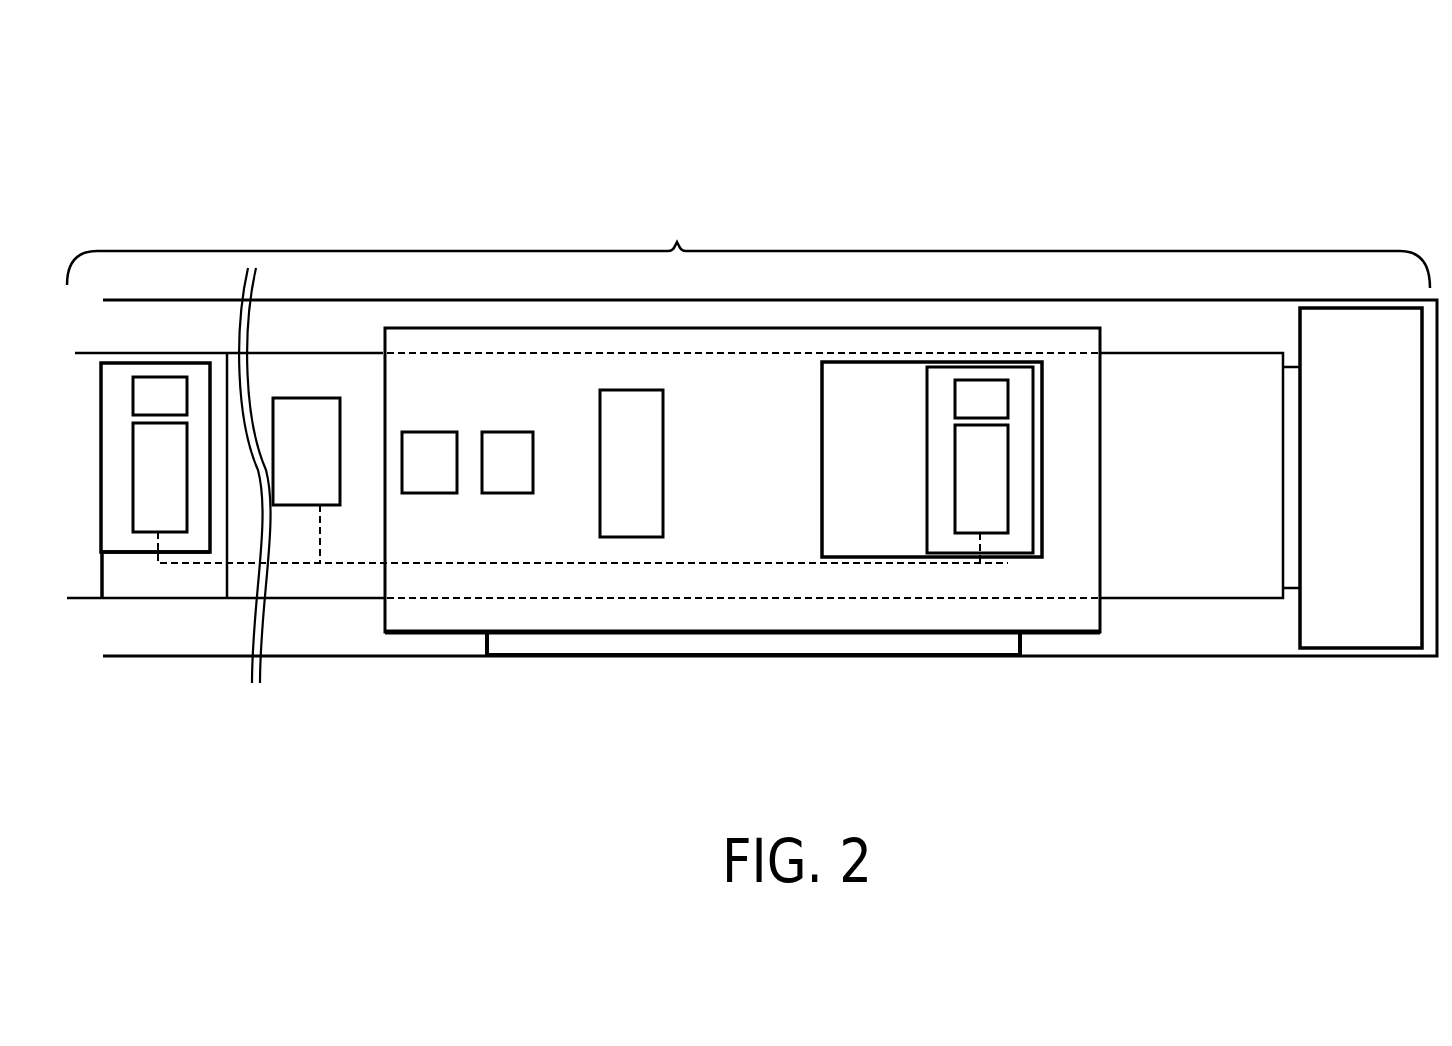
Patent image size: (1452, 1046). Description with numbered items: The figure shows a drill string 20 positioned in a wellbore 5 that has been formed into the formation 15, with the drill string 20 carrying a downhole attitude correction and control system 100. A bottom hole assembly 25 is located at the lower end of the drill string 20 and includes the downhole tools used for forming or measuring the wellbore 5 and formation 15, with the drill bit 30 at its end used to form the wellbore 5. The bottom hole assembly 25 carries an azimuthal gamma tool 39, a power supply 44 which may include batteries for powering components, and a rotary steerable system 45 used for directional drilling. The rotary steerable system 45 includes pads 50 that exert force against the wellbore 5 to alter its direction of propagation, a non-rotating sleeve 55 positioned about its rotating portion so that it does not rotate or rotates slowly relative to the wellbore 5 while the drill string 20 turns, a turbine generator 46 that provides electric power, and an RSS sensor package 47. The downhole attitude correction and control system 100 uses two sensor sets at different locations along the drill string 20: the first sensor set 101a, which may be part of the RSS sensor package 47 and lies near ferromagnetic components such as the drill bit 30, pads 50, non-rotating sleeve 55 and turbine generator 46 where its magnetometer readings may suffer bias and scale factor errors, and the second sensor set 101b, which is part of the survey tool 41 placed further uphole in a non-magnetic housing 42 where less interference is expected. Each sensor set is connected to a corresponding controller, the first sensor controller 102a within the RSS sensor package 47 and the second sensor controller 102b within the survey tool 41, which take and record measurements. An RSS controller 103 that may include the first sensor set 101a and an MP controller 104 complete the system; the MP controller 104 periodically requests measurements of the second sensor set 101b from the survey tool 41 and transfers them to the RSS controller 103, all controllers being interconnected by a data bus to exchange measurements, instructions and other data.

The downhole attitude correction and control system 100 is at (782, 145).
The drill string 20 is at (188, 275).
The wellbore 5 is at (225, 300).
The bottom hole assembly 25 is at (677, 243).
The formation 15 is at (1035, 145).
The non-rotating sleeve 55 is at (498, 327).
The azimuthal gamma tool 39 is at (630, 390).
The first sensor set 101a is at (987, 380).
The second sensor set 101b is at (160, 387).
The first sensor controller 102a is at (988, 503).
The second sensor controller 102b is at (175, 510).
The RSS controller 103 is at (940, 547).
The MP controller 104 is at (305, 507).
The survey tool 41 is at (145, 553).
The non-magnetic housing 42 is at (120, 600).
The power supply 44 is at (430, 492).
The turbine generator 46 is at (507, 492).
The rotary steerable system 45 is at (683, 675).
The RSS sensor package 47 is at (862, 553).
The pads 50 is at (753, 643).
The drill bit 30 is at (1377, 635).